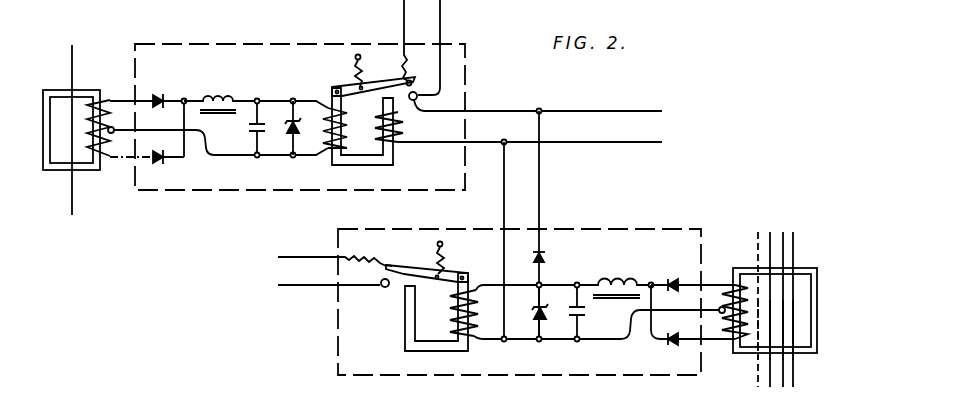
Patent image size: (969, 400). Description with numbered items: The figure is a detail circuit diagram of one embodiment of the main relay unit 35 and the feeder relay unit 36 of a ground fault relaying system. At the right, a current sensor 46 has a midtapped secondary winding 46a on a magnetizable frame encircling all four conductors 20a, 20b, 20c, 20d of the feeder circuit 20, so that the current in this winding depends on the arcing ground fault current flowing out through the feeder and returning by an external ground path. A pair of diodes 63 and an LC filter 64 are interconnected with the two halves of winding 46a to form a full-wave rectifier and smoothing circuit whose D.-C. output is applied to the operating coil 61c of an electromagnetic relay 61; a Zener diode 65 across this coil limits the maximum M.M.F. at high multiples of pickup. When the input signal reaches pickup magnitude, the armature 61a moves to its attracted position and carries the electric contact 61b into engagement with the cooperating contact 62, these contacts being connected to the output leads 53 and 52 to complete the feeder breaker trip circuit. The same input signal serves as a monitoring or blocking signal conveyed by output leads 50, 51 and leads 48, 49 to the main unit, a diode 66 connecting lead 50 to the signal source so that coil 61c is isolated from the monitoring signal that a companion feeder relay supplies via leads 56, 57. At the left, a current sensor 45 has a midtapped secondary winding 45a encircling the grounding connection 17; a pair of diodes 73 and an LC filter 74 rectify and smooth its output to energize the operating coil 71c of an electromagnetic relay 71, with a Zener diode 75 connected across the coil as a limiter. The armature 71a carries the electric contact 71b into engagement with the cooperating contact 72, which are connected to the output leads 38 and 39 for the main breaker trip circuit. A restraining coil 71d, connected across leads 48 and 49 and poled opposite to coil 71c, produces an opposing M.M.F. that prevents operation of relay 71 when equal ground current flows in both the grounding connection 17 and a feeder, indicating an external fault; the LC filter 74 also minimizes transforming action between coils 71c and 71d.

The grounding connection 17 is at (72, 52).
The current sensor 45 is at (61, 90).
The midtapped secondary winding 45a is at (104, 163).
The main relay unit 35 is at (170, 44).
The pair of diodes 73 is at (158, 150).
The LC filter 74 is at (233, 135).
The Zener diode 75 is at (290, 134).
The electromagnetic relay 71 is at (370, 160).
The armature 71a is at (345, 87).
The electric contact 71b is at (436, 88).
The operating coil 71c is at (326, 152).
The restraining coil 71d is at (398, 143).
The cooperating contact 72 is at (414, 102).
The output lead 38 is at (404, 18).
The output lead 39 is at (440, 18).
The lead 48 is at (506, 111).
The lead 49 is at (477, 145).
The output lead 50 is at (539, 203).
The output lead 51 is at (504, 203).
The lead 56 is at (648, 110).
The lead 57 is at (648, 144).
The feeder relay unit 36 is at (658, 229).
The output lead 53 is at (298, 256).
The output lead 52 is at (292, 286).
The cooperating contact 62 is at (384, 288).
The electromagnetic relay 61 is at (408, 340).
The armature 61a is at (452, 273).
The electric contact 61b is at (387, 270).
The operating coil 61c is at (452, 318).
The diode 66 is at (546, 257).
The Zener diode 65 is at (535, 311).
The LC filter 64 is at (624, 321).
The pair of diodes 63 is at (676, 330).
The current sensor 46 is at (803, 349).
The midtapped secondary winding 46a is at (731, 339).
The feeder circuit 20 is at (757, 383).
The conductor 20a is at (795, 246).
The conductor 20b is at (784, 241).
The conductor 20c is at (768, 243).
The conductor 20d is at (756, 257).